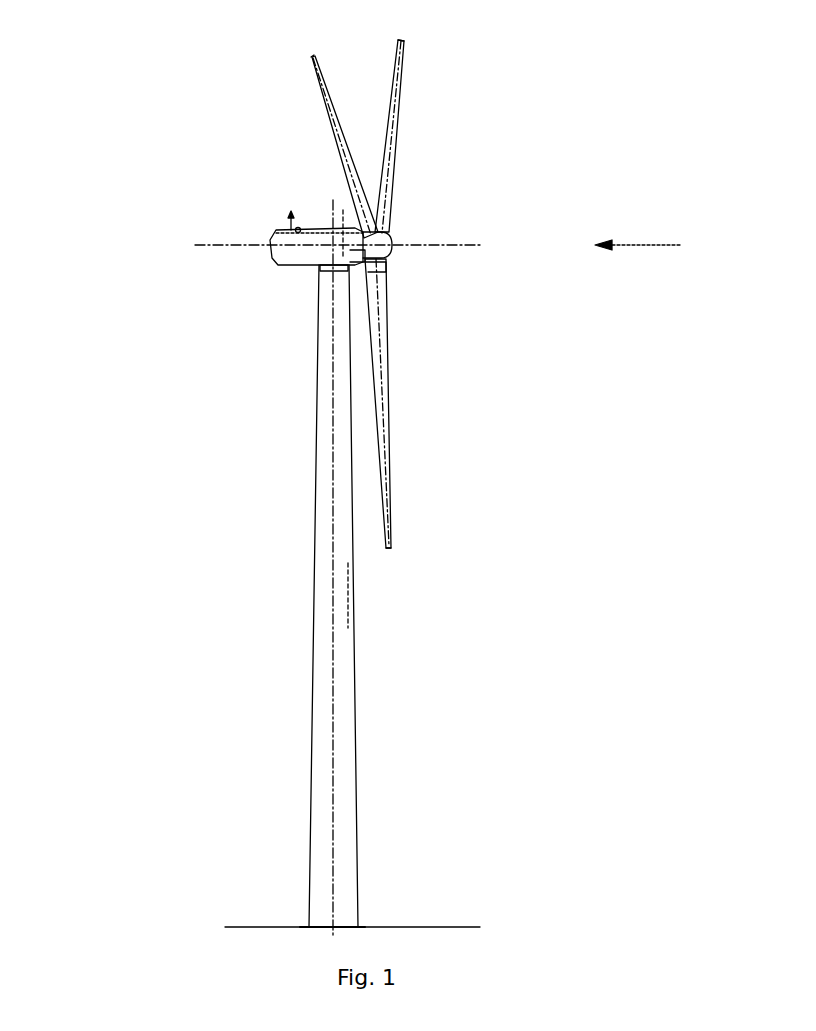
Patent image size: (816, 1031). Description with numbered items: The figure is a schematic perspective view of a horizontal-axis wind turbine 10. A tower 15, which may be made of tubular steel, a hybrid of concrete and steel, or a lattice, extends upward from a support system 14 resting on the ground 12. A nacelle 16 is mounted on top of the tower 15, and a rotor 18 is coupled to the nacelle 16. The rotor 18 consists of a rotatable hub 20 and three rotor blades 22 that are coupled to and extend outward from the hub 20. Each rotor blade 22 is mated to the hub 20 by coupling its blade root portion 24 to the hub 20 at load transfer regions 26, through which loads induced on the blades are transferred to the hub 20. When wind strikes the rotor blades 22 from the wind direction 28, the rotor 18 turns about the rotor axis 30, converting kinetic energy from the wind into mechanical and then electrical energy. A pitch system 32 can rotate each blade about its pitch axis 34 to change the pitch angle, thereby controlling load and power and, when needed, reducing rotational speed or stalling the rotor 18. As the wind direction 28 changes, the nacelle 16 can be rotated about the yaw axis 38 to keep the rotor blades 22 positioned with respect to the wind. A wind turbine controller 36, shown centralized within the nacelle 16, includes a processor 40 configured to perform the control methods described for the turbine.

The wind turbine 10 is at (125, 60).
The ground 12 is at (243, 926).
The support system 14 is at (300, 925).
The tower 15 is at (328, 573).
The nacelle 16 is at (290, 265).
The rotor 18 is at (410, 160).
The rotatable hub 20 is at (390, 240).
The rotor blade 22 is at (330, 114).
The blade root portion 24 is at (380, 335).
The load transfer region 26 is at (373, 262).
The wind direction 28 is at (652, 244).
The rotor axis 30 is at (450, 247).
The pitch system 32 is at (384, 283).
The pitch axis 34 is at (310, 57).
The wind turbine controller 36 is at (337, 264).
The yaw axis 38 is at (336, 631).
The processor 40 is at (343, 210).